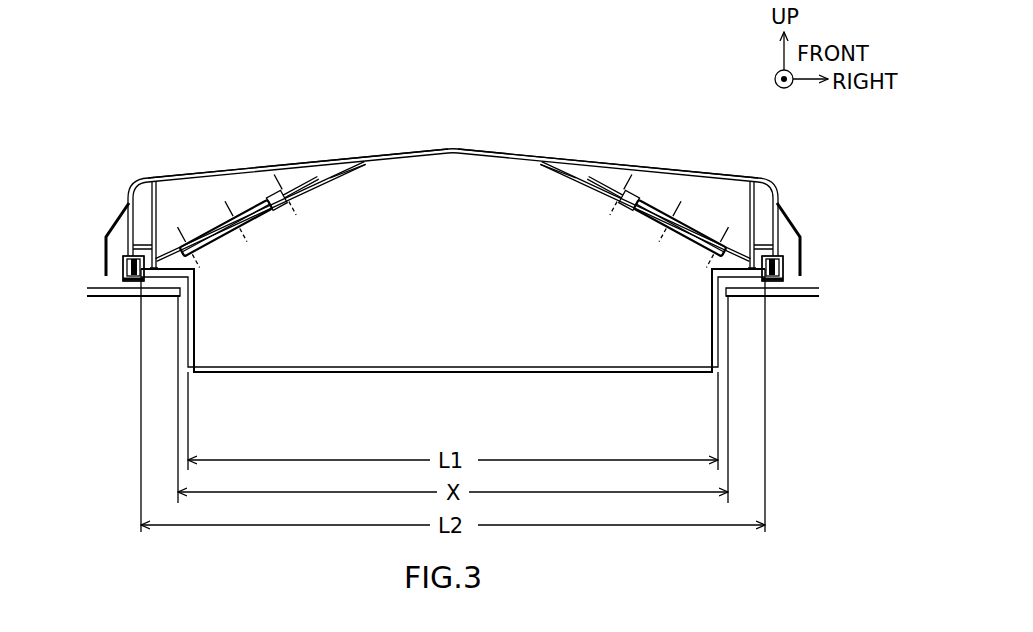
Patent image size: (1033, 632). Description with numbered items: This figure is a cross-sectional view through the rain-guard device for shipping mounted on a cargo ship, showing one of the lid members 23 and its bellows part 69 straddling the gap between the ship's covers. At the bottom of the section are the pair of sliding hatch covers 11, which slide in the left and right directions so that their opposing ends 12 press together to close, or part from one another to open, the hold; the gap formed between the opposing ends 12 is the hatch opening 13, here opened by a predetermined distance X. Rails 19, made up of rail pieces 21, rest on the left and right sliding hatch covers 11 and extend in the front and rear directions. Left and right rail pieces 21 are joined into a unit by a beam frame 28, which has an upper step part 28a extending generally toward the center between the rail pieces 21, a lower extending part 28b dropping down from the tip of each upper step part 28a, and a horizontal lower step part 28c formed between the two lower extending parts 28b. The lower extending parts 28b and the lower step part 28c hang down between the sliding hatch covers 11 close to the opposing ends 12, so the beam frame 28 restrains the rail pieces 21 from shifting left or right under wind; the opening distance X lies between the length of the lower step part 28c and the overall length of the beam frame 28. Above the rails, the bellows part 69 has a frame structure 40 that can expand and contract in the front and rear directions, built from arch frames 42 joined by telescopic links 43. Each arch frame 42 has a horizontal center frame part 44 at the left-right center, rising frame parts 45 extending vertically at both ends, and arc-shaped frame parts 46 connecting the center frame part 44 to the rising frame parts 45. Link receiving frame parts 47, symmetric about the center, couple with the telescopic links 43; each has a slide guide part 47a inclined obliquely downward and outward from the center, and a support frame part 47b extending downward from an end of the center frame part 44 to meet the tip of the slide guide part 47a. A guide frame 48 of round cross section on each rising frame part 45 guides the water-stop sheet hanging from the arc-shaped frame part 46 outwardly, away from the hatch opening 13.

The sliding hatch cover 11 is at (118, 298).
The opposing end 12 is at (178, 289).
The hatch opening 13 is at (462, 306).
The rail 19 is at (123, 272).
The rail piece 21 is at (123, 272).
The lid member 23 is at (640, 137).
The beam frame 28 is at (455, 364).
The upper step part 28a is at (162, 276).
The lower extending part 28b is at (196, 340).
The lower step part 28c is at (503, 376).
The frame structure 40 is at (197, 127).
The arch frame 42 is at (262, 146).
The telescopic link 43 is at (218, 253).
The center frame part 44 is at (440, 147).
The rising frame part 45 is at (131, 220).
The arc-shaped frame part 46 is at (140, 184).
The link receiving frame part 47 is at (338, 187).
The slide guide part 47a is at (322, 178).
The support frame part 47b is at (157, 206).
The guide frame 48 is at (106, 256).
The bellows part 69 is at (665, 158).